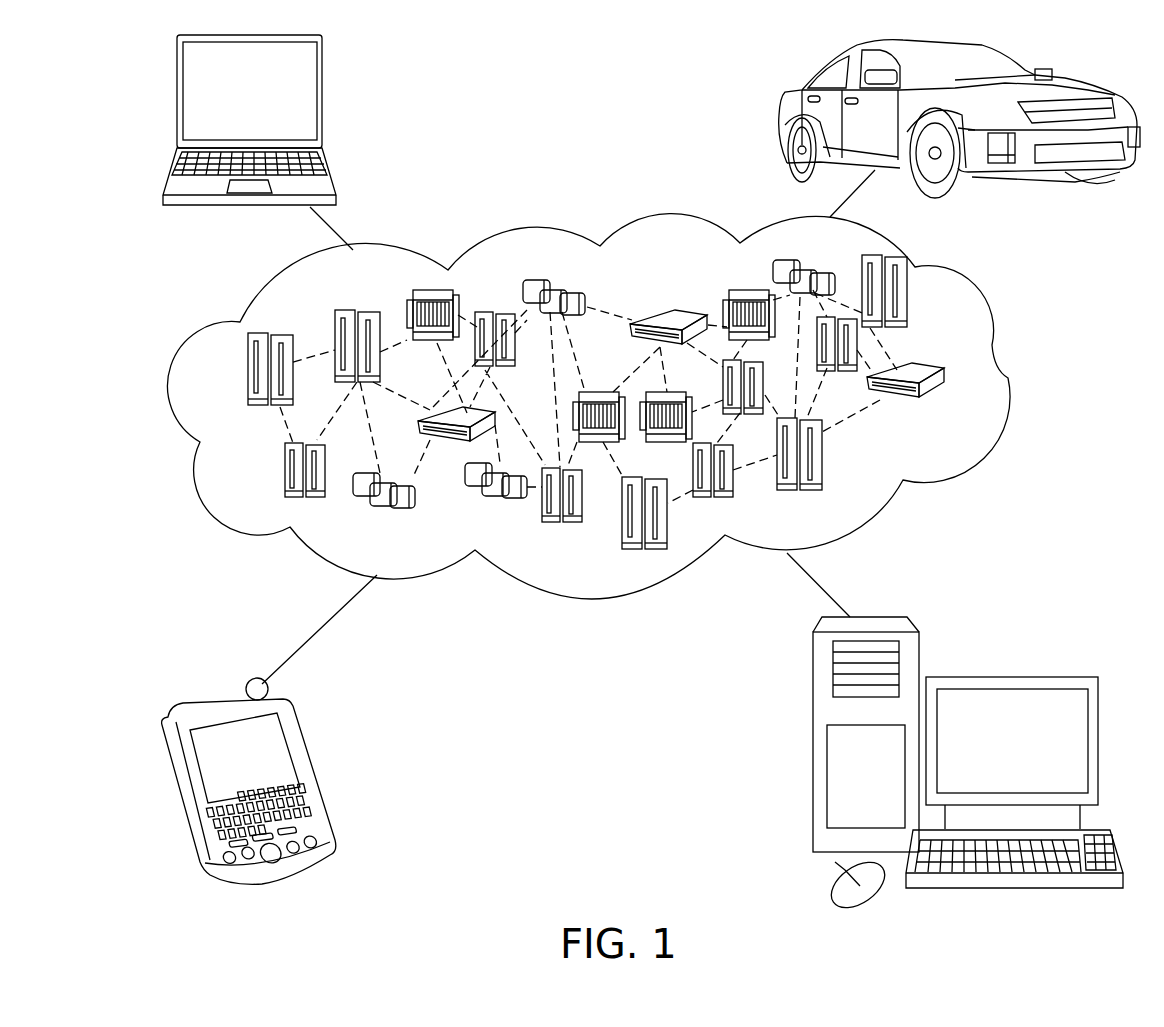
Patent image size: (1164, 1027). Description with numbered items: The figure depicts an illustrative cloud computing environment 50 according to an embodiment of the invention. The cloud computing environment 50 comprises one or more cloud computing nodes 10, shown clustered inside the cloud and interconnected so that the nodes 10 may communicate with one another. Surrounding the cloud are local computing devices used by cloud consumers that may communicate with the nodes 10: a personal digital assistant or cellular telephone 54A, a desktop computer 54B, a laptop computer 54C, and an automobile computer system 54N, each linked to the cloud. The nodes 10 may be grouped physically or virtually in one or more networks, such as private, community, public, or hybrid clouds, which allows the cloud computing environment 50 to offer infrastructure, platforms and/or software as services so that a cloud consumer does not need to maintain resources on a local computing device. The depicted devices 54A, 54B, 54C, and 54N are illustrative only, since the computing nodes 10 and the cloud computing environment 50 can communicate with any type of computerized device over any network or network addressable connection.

The cloud computing nodes 10 is at (957, 413).
The cloud computing environment 50 is at (1008, 378).
The personal digital assistant or cellular telephone 54A is at (313, 772).
The desktop computer 54B is at (1010, 677).
The laptop computer 54C is at (322, 98).
The automobile computer system 54N is at (778, 117).